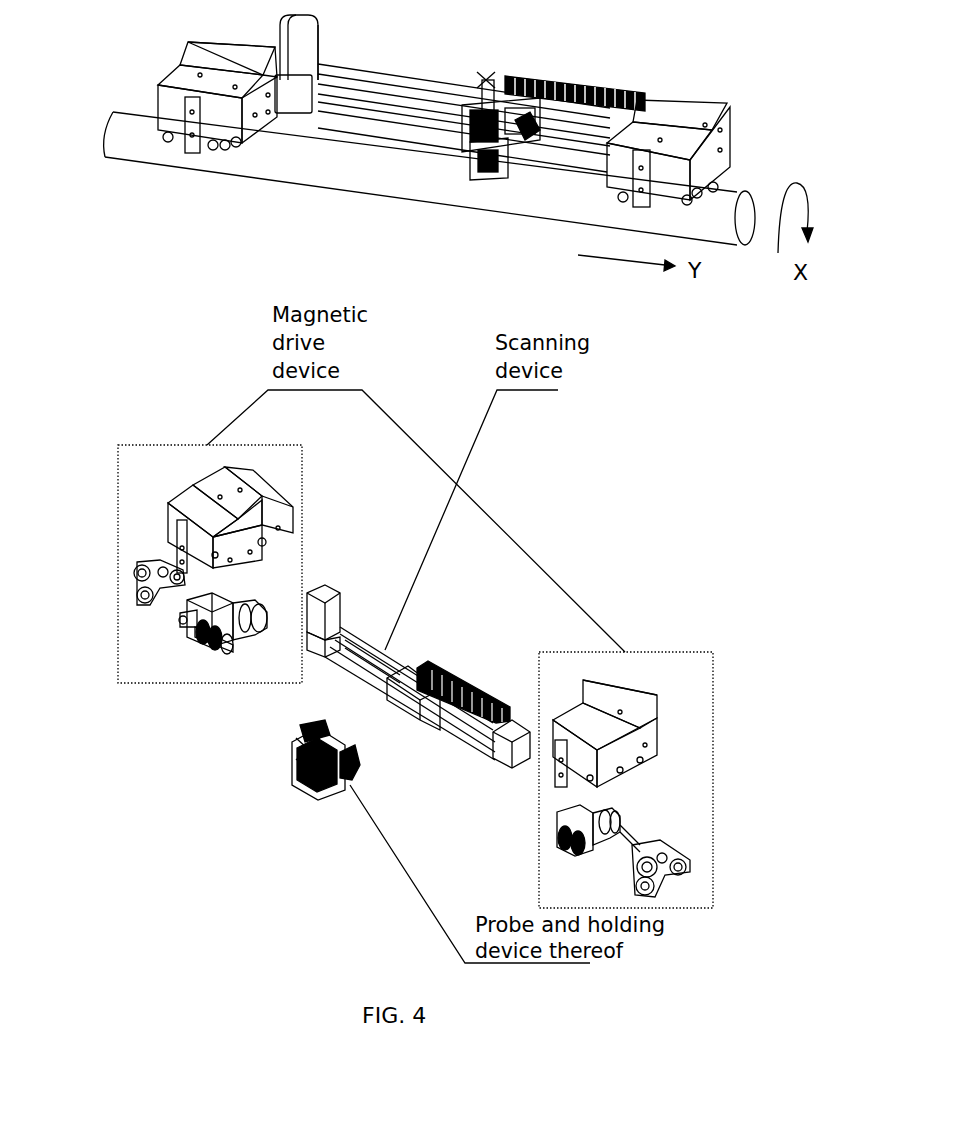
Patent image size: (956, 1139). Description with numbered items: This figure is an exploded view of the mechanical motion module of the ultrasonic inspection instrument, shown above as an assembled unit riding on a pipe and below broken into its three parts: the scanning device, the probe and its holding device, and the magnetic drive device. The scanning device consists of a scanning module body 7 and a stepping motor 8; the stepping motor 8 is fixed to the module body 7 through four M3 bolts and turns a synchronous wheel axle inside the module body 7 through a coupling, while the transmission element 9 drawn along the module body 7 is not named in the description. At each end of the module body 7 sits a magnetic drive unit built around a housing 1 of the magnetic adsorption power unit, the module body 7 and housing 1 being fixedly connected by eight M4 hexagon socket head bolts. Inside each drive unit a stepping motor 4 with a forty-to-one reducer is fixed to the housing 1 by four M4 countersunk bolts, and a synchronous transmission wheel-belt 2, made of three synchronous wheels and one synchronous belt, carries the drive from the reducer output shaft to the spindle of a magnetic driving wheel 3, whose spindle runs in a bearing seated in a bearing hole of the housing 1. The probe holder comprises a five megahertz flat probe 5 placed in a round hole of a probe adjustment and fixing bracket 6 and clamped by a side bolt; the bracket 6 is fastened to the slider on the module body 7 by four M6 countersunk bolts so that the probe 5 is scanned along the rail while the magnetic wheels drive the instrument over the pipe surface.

The housing 1 is at (213, 515).
The synchronous transmission wheel-belt 2 is at (133, 590).
The magnetic driving wheel 3 is at (202, 643).
The stepping motor 4 is at (205, 645).
The flat probe 5 is at (298, 780).
The probe adjustment and fixing bracket 6 is at (324, 800).
The scanning module body 7 is at (510, 723).
The stepping motor 8 is at (332, 593).
The scanning drive belt 9 is at (505, 544).